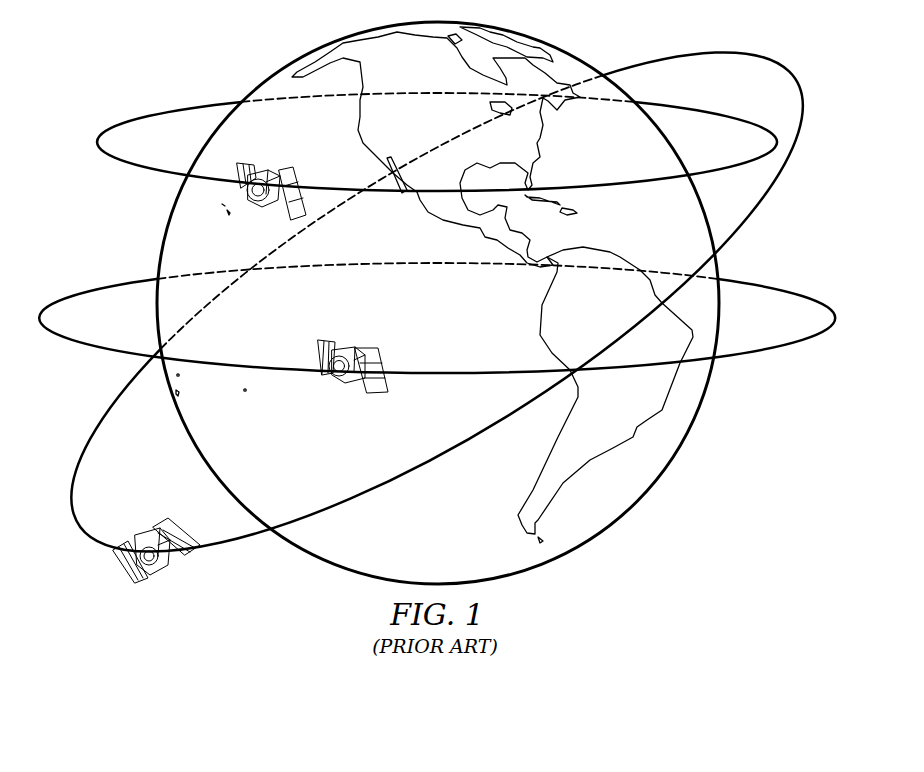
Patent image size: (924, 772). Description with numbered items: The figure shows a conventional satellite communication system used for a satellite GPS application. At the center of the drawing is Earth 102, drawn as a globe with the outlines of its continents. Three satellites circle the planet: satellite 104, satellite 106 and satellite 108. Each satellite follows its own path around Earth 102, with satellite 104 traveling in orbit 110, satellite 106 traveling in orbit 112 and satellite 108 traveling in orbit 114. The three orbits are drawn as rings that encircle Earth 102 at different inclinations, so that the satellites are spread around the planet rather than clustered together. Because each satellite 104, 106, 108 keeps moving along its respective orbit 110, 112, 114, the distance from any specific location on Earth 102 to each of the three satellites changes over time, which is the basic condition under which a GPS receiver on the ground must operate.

The Earth 102 is at (305, 55).
The satellite 104 is at (146, 536).
The satellite 106 is at (350, 350).
The satellite 108 is at (271, 173).
The orbit 110 is at (388, 483).
The orbit 112 is at (99, 287).
The orbit 114 is at (174, 110).